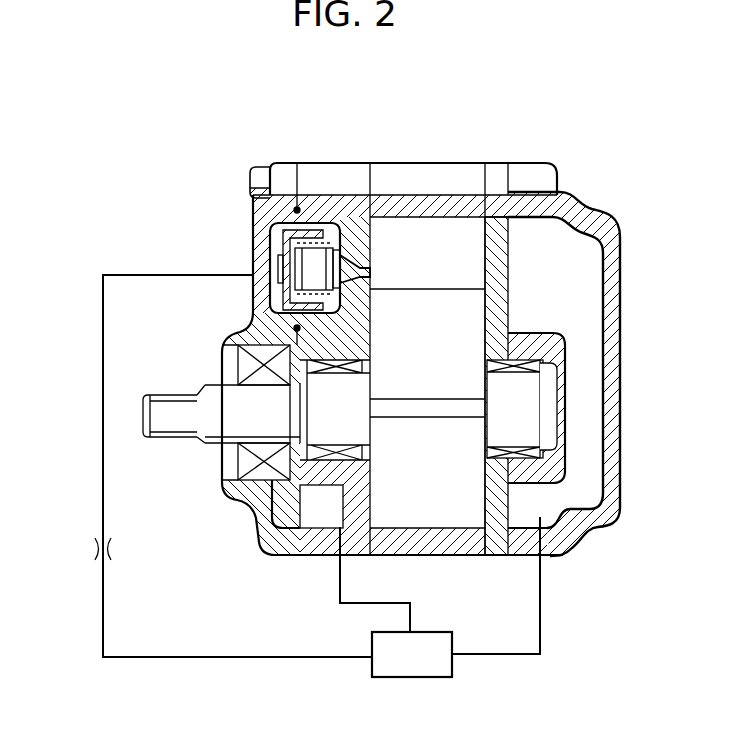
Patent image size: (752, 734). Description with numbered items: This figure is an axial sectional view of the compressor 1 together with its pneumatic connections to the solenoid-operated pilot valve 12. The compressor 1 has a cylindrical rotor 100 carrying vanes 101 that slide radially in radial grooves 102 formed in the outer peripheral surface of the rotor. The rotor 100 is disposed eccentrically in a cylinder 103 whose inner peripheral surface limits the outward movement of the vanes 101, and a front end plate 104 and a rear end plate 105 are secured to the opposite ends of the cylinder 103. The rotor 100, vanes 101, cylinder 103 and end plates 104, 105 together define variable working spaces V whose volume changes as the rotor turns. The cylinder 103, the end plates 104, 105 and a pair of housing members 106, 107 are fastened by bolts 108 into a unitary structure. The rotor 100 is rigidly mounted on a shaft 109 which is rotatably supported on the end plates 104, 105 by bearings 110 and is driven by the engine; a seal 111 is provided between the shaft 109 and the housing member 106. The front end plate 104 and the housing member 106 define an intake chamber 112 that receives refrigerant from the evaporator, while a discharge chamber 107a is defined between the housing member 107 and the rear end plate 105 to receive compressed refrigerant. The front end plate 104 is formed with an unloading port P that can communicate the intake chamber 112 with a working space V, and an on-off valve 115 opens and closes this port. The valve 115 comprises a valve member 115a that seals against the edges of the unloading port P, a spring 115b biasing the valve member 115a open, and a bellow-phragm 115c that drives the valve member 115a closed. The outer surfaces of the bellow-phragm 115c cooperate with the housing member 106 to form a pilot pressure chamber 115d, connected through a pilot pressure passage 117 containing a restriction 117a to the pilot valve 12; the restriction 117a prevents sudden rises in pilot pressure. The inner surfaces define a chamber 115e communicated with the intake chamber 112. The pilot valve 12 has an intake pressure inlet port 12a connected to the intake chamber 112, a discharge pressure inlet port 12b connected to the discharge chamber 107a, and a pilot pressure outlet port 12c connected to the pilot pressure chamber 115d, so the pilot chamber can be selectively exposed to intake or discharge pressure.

The compressor 1 is at (497, 160).
The solenoid-operated pilot valve 12 is at (405, 667).
The compressor intake pressure inlet port 12a is at (413, 628).
The compressor discharge pressure inlet port 12b is at (455, 657).
The pilot pressure outlet port 12c is at (367, 660).
The rotor 100 is at (472, 303).
The vanes 101 is at (475, 407).
The radial grooves 102 is at (425, 418).
The cylinder 103 is at (458, 207).
The front end plate 104 is at (352, 205).
The rear end plate 105 is at (500, 180).
The housing member 106 is at (278, 205).
The housing member 107 is at (565, 207).
The discharge chamber 107a is at (590, 243).
The bolts 108 is at (258, 180).
The shaft 109 is at (215, 397).
The bearings 110 is at (547, 468).
The seal 111 is at (250, 467).
The intake chamber 112 is at (330, 228).
The on-off valve 115 is at (319, 266).
The valve member 115a is at (365, 272).
The spring 115b is at (343, 337).
The bellow-phragm 115c is at (273, 307).
The pilot pressure chamber 115d is at (280, 237).
The chamber 115e is at (347, 307).
The pilot pressure passage 117 is at (208, 660).
The restriction 117a is at (99, 547).
The unloading port P is at (390, 240).
The variable working spaces V is at (472, 252).